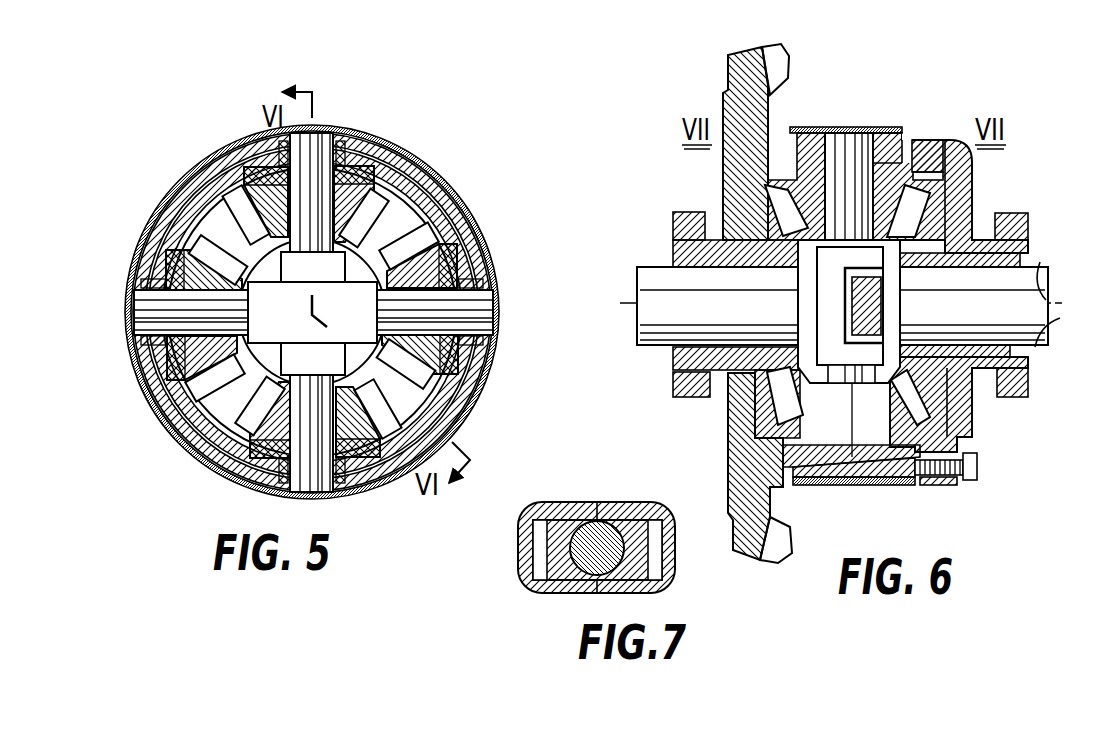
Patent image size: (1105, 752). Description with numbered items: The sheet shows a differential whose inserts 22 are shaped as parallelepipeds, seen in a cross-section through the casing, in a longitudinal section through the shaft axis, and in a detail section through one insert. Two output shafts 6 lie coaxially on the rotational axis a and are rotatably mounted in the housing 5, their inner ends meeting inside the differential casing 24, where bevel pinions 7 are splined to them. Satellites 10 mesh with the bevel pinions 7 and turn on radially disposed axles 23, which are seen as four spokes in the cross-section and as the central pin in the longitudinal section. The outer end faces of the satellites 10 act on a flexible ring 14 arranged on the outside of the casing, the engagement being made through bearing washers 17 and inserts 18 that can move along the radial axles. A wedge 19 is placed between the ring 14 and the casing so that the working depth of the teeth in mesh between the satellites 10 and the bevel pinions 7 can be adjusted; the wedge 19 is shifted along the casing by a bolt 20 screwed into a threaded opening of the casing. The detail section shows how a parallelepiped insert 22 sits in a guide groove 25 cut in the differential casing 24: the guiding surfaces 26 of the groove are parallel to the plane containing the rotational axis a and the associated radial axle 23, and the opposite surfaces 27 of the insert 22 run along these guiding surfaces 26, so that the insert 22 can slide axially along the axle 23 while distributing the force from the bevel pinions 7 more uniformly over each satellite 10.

In FIG. 6, the housing 5 is at (675, 381).
In FIG. 6, the output shafts 6 is at (645, 292).
In FIG. 6, the bevel pinions 7 is at (745, 390).
In FIG. 5, the satellites 10 is at (185, 352).
In FIG. 6, the satellites 10 is at (905, 203).
In FIG. 5, the ring 14 is at (492, 267).
In FIG. 6, the ring 14 is at (855, 165).
In FIG. 5, the bearing washers 17 is at (362, 183).
In FIG. 7, the inserts 18 is at (640, 556).
In FIG. 6, the wedge 19 is at (897, 490).
In FIG. 6, the bolt 20 is at (978, 469).
In FIG. 5, the inserts 22 is at (348, 152).
In FIG. 6, the inserts 22 is at (917, 152).
In FIG. 5, the radially disposed axles 23 is at (307, 160).
In FIG. 6, the radially disposed axles 23 is at (893, 150).
In FIG. 7, the radially disposed axles 23 is at (585, 574).
In FIG. 5, the differential casing 24 is at (448, 186).
In FIG. 6, the differential casing 24 is at (722, 160).
In FIG. 7, the differential casing 24 is at (522, 557).
In FIG. 7, the guide grooves 25 is at (538, 570).
In FIG. 7, the guiding surfaces 26 is at (534, 522).
In FIG. 7, the opposite surfaces 27 is at (645, 525).
In FIG. 6, the rotational axis a is at (1048, 301).